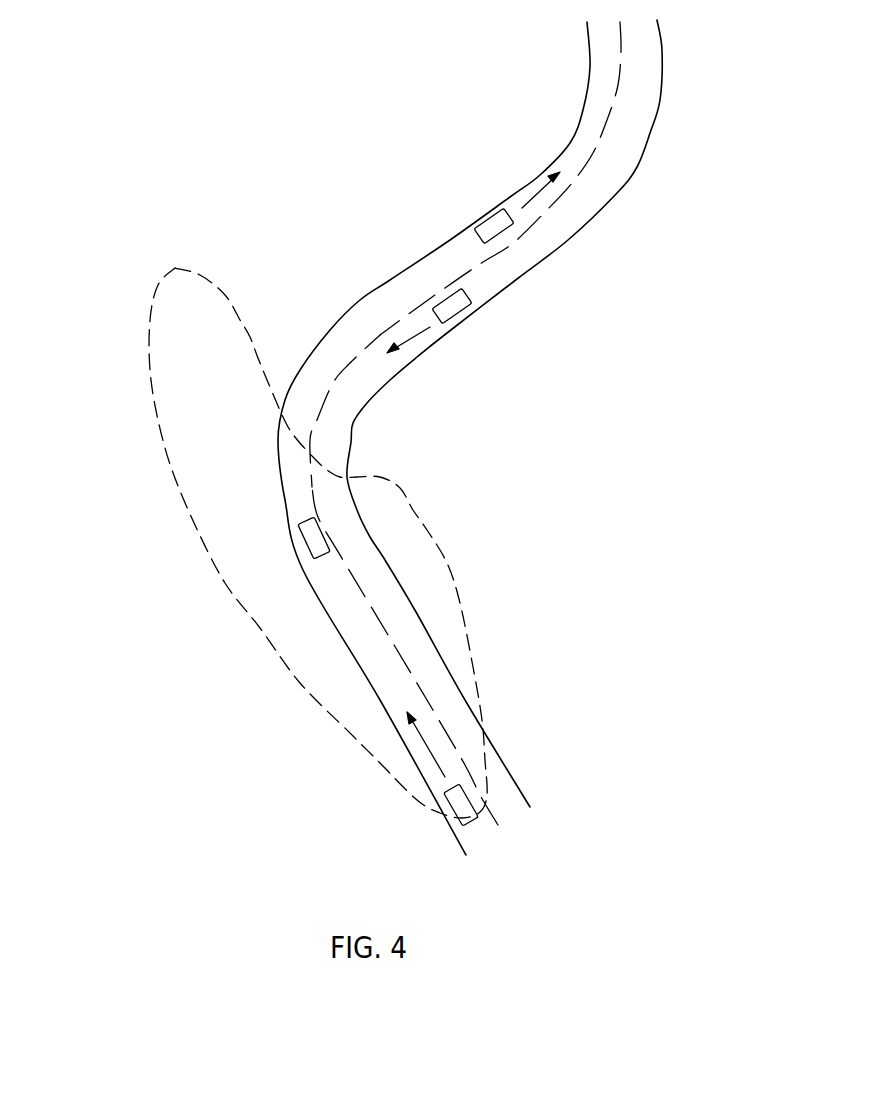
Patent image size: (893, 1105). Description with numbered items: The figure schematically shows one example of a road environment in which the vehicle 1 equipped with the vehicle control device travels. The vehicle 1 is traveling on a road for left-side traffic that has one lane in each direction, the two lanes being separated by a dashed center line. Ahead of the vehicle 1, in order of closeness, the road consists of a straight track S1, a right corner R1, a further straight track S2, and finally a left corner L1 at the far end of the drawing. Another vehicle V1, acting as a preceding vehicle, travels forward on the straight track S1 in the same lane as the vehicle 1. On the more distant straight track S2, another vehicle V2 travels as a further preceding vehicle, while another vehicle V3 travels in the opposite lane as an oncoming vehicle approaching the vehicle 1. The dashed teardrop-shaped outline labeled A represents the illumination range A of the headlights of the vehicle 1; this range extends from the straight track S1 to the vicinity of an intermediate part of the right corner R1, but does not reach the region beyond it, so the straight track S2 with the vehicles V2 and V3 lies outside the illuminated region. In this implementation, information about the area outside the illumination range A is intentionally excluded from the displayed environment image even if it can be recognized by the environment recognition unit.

The vehicle 1 is at (448, 808).
The another vehicle (preceding vehicle) V1 is at (314, 550).
The another vehicle (preceding vehicle) V2 is at (486, 221).
The another vehicle (oncoming vehicle) V3 is at (443, 305).
The left corner L1 is at (642, 152).
The straight track S1 is at (416, 612).
The straight track S2 is at (517, 279).
The right corner R1 is at (351, 442).
The illumination range A is at (225, 583).